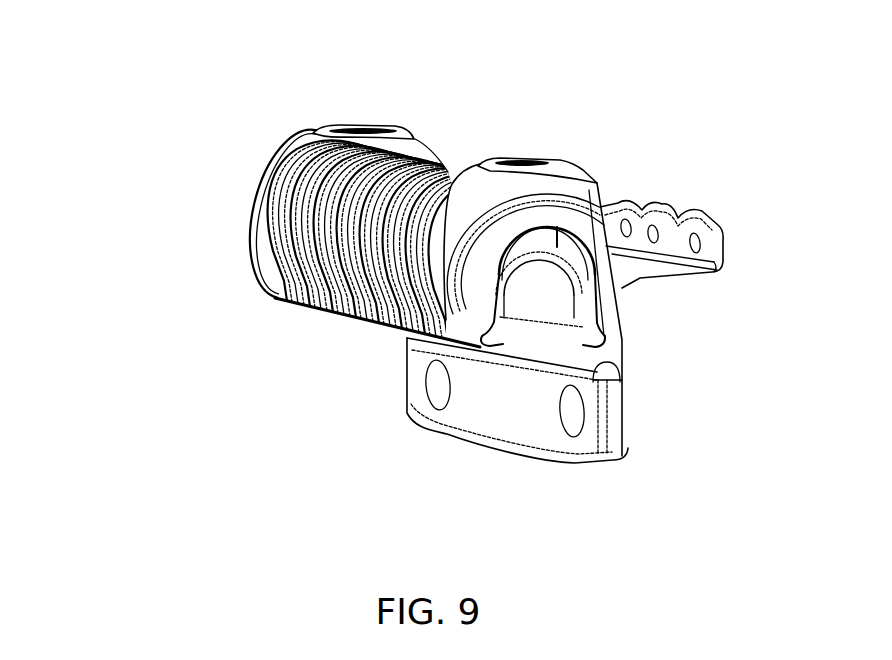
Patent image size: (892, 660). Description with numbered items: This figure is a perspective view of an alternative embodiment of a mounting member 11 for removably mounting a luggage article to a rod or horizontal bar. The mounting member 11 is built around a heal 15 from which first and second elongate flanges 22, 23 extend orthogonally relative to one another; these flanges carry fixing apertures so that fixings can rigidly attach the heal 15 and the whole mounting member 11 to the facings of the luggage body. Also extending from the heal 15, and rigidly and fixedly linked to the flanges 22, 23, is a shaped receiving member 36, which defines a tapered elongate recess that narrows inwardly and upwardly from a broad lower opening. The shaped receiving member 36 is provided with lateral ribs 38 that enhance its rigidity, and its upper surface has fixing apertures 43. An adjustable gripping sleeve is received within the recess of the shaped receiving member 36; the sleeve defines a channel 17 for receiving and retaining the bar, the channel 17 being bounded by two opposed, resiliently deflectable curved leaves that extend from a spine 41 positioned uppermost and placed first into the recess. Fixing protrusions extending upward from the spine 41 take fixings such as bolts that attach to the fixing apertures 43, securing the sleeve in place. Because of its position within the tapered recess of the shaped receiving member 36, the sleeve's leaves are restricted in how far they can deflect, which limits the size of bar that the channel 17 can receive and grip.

The mounting member 11 is at (197, 389).
The heal 15 is at (627, 293).
The channel 17 is at (543, 318).
The first elongate flange 22 is at (671, 282).
The second elongate flange 23 is at (533, 430).
The shaped receiving member 36 is at (332, 240).
The lateral ribs 38 is at (323, 310).
The spine 41 is at (532, 258).
The fixing apertures 43 is at (356, 122).